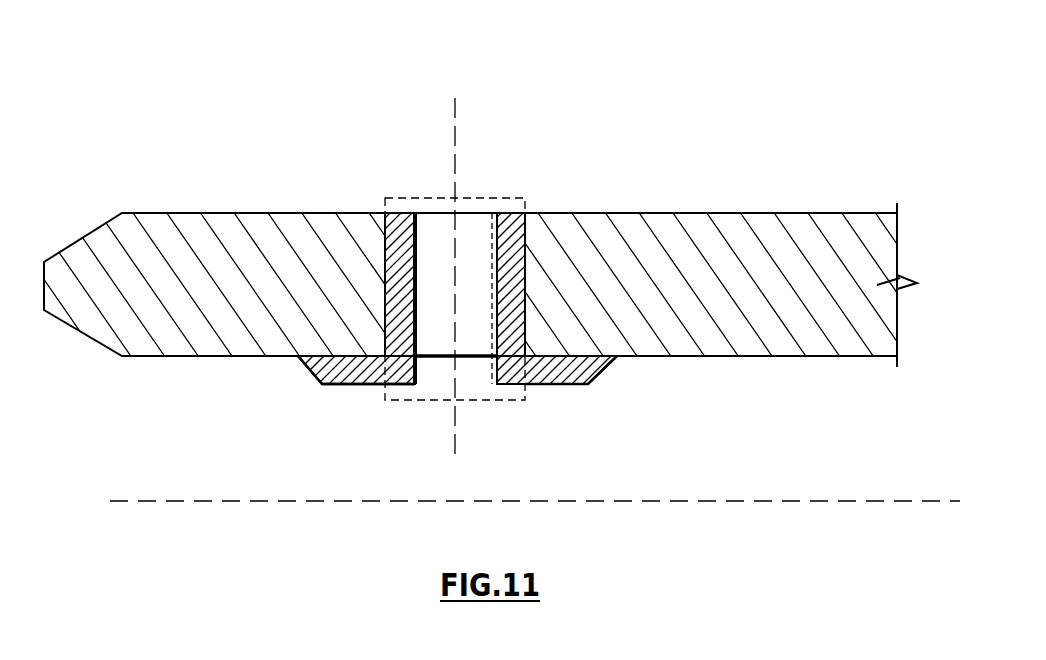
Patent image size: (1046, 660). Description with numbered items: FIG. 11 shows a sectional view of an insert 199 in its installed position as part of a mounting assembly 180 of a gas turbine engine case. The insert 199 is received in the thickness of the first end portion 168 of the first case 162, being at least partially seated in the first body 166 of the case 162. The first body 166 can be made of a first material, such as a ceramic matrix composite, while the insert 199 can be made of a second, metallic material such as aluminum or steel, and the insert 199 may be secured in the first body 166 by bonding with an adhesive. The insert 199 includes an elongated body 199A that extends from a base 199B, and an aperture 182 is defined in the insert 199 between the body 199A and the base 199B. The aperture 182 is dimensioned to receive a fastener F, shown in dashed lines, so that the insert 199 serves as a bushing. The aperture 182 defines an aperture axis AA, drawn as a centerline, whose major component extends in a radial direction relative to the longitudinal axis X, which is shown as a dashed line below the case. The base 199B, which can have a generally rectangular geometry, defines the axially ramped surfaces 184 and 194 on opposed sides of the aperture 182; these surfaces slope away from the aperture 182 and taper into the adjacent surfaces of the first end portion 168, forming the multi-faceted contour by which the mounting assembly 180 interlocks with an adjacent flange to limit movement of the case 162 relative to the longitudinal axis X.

The first case 162 is at (730, 201).
The first body 166 is at (620, 232).
The first end portion 168 is at (763, 230).
The mounting assembly 180 is at (459, 239).
The aperture 182 is at (414, 232).
The axially ramped surface 184 is at (605, 364).
The axially ramped surface 194 is at (302, 367).
The insert 199 is at (516, 208).
The elongated body 199A is at (527, 228).
The base 199B is at (346, 385).
The fastener F is at (398, 197).
The aperture axis AA is at (456, 108).
The longitudinal axis X is at (833, 501).